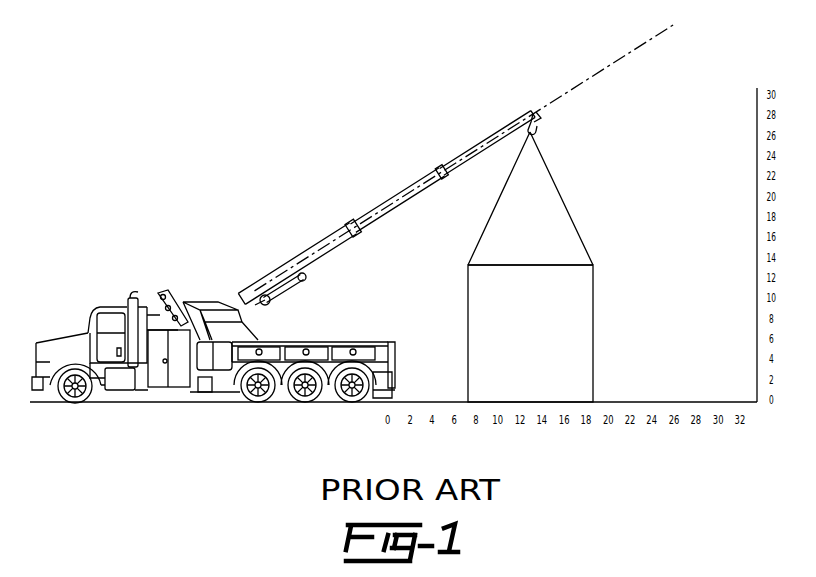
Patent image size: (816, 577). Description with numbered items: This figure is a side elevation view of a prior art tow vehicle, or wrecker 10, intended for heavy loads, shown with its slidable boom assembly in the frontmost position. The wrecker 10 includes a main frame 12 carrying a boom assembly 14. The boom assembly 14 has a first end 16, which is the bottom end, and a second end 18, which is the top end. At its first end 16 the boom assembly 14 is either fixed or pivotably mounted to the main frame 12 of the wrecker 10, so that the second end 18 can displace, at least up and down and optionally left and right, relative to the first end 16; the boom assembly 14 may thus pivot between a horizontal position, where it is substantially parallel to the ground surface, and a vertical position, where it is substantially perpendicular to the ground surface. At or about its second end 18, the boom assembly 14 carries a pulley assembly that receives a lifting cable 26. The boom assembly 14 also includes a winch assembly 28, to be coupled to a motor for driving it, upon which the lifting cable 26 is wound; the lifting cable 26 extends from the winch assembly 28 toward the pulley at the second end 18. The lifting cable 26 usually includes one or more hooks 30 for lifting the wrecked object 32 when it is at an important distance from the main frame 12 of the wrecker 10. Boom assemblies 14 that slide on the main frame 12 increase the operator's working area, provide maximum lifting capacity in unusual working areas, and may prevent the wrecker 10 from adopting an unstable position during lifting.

The wrecker 10 is at (352, 243).
The main frame 12 is at (224, 362).
The boom assembly 14 is at (376, 138).
The first end 16 is at (138, 264).
The second end 18 is at (484, 86).
The lifting cable 26 is at (558, 190).
The winch assembly 28 is at (174, 277).
The hook 30 is at (593, 265).
The wrecked object 32 is at (542, 345).